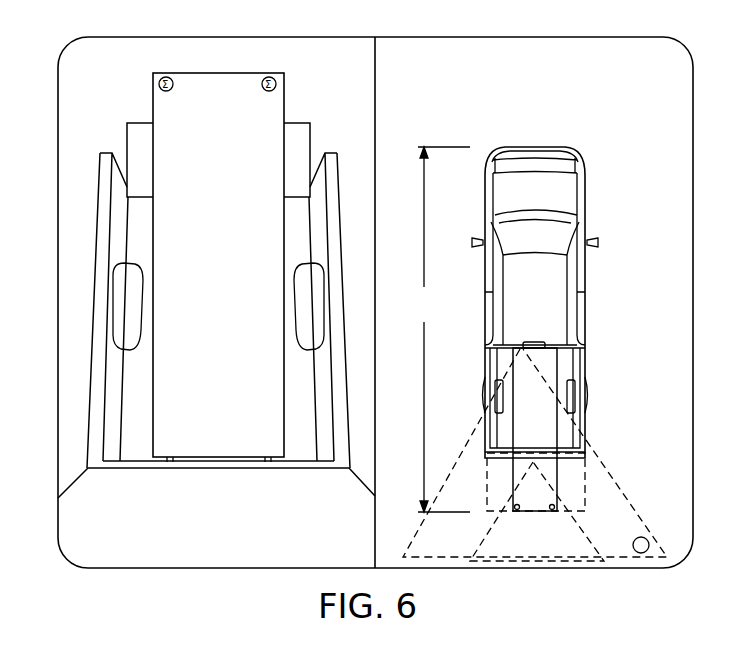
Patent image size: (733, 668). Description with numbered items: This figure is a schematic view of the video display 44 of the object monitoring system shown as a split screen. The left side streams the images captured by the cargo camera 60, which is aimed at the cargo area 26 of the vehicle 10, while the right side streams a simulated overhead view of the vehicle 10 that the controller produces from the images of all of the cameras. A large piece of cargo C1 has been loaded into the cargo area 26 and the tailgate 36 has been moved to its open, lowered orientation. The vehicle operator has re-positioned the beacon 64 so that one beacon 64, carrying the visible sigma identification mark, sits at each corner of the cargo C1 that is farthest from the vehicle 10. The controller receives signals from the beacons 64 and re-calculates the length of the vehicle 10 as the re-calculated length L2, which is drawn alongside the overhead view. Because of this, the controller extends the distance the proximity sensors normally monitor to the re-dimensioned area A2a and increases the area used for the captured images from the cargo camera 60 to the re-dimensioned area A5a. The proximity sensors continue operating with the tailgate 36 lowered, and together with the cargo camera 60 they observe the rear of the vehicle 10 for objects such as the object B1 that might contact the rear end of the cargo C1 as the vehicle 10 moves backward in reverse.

The video display 44 is at (618, 33).
The tailgate 36 is at (295, 138).
The cargo area 26 is at (140, 227).
The vehicle 10 is at (77, 483).
The cargo camera 60 is at (518, 347).
The beacon 64 is at (551, 509).
The re-calculated length L2 is at (442, 329).
The cargo C1 is at (513, 488).
The re-dimensioned area A5a is at (607, 500).
The object B1 is at (647, 540).
The re-dimensioned area A2a is at (560, 545).